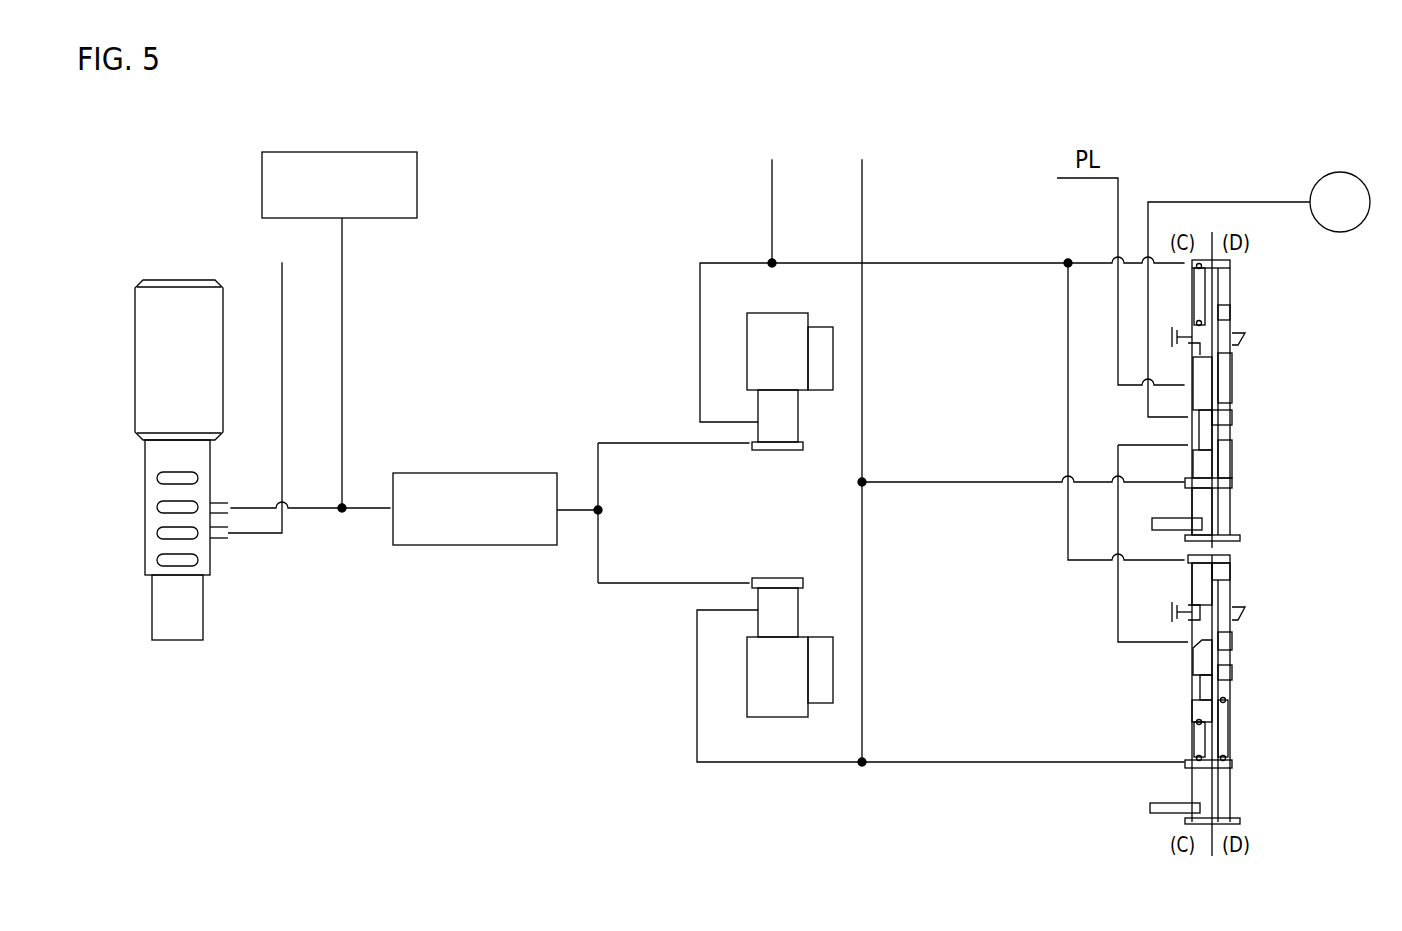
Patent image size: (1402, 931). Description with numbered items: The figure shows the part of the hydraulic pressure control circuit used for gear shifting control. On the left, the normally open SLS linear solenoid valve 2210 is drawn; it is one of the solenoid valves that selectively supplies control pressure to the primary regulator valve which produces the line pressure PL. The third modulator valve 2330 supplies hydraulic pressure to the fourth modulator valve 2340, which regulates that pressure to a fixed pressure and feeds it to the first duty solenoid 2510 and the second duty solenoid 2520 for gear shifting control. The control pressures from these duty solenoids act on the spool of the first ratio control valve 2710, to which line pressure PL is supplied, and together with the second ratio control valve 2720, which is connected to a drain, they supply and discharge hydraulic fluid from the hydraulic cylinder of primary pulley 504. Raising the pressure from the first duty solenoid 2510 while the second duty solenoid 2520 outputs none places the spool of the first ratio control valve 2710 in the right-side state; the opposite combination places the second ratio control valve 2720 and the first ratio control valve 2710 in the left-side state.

The modulator valve (3) 2330 is at (340, 152).
The modulator valve (4) 2340 is at (466, 545).
The SLS linear solenoid valve 2210 is at (203, 596).
The duty solenoid (2) for gear shifting control 2520 is at (775, 451).
The duty solenoid (1) for gear shifting control 2510 is at (775, 577).
The ratio control valve (1) 2710 is at (1246, 381).
The ratio control valve (2) 2720 is at (1246, 671).
The primary pulley 504 is at (1346, 173).